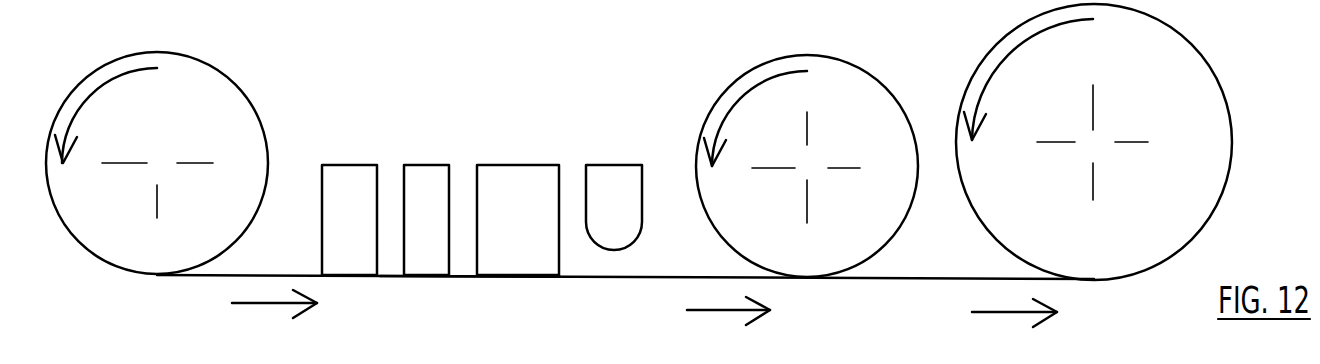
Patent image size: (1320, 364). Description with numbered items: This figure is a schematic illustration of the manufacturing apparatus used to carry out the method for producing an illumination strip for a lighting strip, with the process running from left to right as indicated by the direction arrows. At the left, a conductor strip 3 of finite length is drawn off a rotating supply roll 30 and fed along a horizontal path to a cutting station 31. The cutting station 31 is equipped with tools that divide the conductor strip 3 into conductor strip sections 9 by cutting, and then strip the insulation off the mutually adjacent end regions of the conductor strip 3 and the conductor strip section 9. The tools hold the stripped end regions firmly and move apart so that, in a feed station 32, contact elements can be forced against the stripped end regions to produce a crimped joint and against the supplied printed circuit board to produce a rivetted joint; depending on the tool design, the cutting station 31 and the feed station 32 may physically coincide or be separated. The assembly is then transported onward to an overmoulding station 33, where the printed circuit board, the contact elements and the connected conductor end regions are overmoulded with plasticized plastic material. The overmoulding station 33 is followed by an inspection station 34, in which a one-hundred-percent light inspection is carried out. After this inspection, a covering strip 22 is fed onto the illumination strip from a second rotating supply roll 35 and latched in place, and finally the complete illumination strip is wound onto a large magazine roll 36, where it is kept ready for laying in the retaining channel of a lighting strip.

The conductor strip 3 is at (217, 277).
The conductor strip section 9 is at (465, 277).
The covering strip 22 is at (735, 85).
The supply roll 30 is at (217, 118).
The cutting station 31 is at (345, 192).
The feed station 32 is at (422, 192).
The overmoulding station 33 is at (515, 192).
The inspection station 34 is at (608, 192).
The supply roll 35 is at (860, 133).
The magazine roll 36 is at (1203, 138).